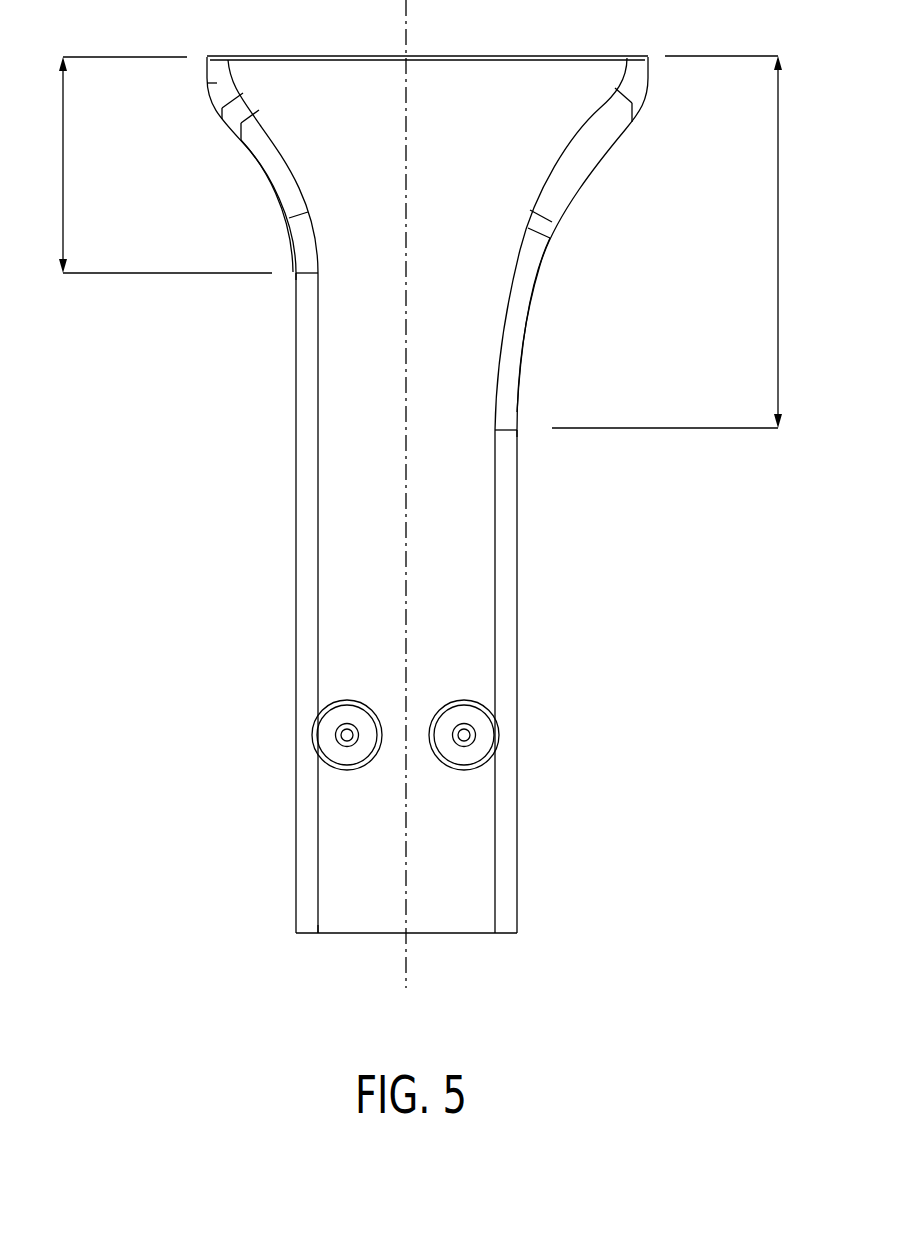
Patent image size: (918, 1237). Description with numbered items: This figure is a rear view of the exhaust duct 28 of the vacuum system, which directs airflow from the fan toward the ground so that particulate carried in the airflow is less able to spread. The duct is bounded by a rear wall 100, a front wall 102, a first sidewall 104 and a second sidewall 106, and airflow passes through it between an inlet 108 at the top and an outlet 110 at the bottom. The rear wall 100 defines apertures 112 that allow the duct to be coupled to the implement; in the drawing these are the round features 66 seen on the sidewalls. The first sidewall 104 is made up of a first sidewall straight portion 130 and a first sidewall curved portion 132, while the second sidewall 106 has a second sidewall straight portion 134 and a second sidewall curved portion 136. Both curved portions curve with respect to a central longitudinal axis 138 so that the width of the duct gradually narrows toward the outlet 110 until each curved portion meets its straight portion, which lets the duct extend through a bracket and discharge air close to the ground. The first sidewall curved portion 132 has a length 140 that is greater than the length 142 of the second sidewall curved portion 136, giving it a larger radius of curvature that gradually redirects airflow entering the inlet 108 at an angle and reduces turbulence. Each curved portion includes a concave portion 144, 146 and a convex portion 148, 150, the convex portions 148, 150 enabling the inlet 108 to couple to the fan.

The exhaust duct 28 is at (766, 468).
The roller 66 is at (343, 713).
The rear wall 100 is at (327, 890).
The front wall 102 is at (208, 424).
The first sidewall 104 is at (517, 570).
The second sidewall 106 is at (296, 580).
The inlet 108 is at (370, 57).
The outlet 110 is at (365, 934).
The apertures 112 is at (345, 739).
The first sidewall straight portion 130 is at (518, 841).
The first sidewall curved portion 132 is at (575, 245).
The second sidewall straight portion 134 is at (296, 906).
The second sidewall curved portion 136 is at (249, 190).
The central longitudinal axis 138 is at (408, 962).
The length 140 is at (674, 242).
The length 142 is at (158, 165).
The concave portion 144 is at (587, 178).
The concave portion 146 is at (247, 146).
The convex portion 148 is at (648, 92).
The convex portion 150 is at (207, 83).